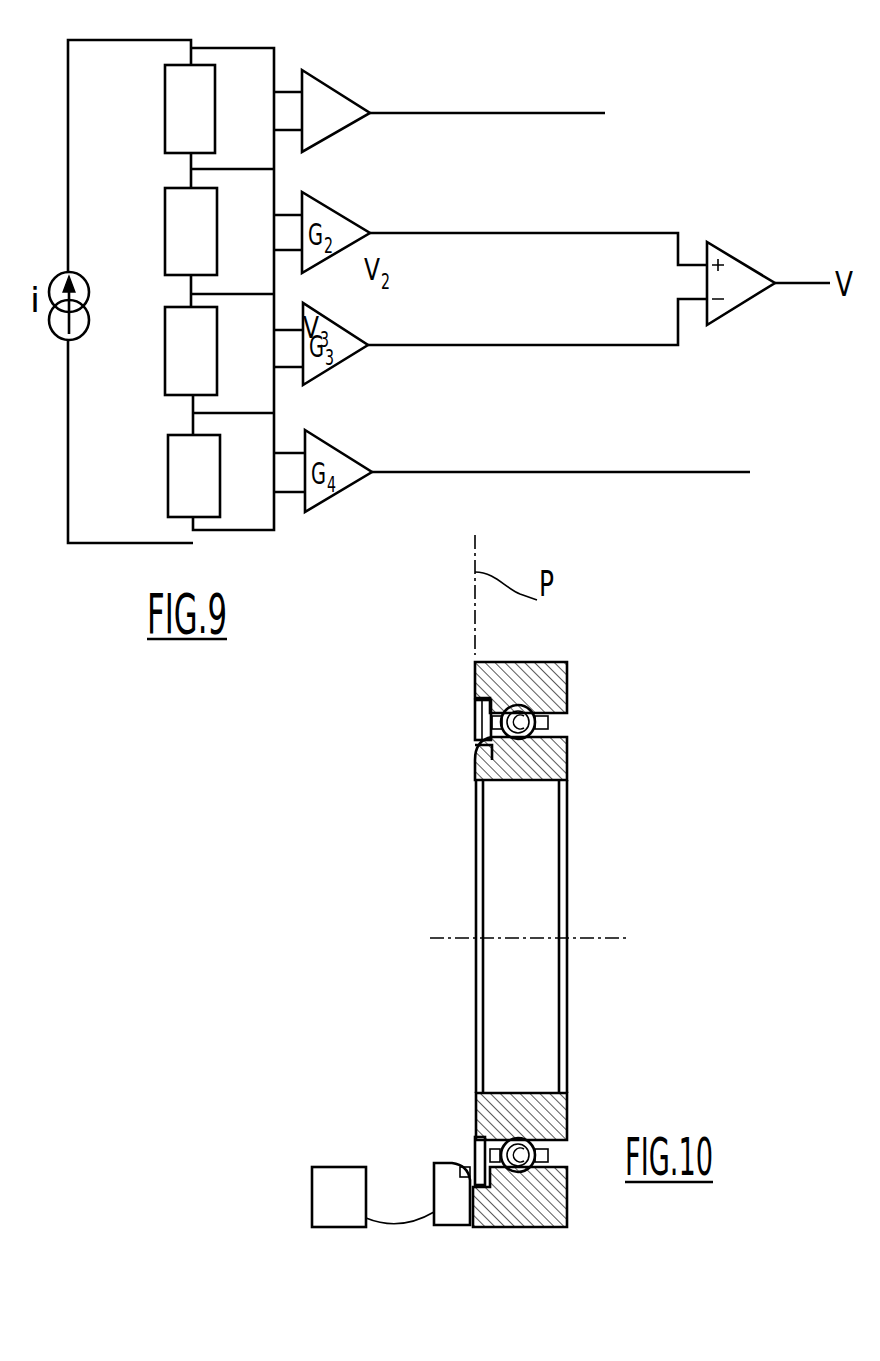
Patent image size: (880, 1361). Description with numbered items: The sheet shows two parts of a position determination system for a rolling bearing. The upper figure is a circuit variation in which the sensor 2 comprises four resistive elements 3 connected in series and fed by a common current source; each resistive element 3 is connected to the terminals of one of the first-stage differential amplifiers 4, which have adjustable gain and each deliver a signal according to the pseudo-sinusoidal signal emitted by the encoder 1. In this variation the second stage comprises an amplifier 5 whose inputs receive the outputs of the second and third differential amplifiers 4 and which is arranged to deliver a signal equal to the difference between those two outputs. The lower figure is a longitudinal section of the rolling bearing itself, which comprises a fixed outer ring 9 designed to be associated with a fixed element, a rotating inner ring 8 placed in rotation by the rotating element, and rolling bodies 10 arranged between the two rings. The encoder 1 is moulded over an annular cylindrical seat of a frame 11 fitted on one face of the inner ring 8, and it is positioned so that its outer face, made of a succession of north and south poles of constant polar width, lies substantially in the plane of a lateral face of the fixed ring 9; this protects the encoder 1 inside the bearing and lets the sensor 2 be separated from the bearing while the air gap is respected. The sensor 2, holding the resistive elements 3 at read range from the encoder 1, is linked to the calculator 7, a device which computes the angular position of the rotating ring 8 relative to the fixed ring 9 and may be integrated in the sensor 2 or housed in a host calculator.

In FIG. 10, the encoder 1 is at (477, 712).
In FIG. 9, the sensor 2 is at (460, 80).
In FIG. 10, the sensor 2 is at (457, 1210).
In FIG. 9, the resistive elements 3 is at (164, 81).
In FIG. 10, the resistive elements 3 is at (460, 1163).
In FIG. 9, the differential amplifiers 4 is at (315, 82).
In FIG. 9, the amplifier 5 is at (743, 302).
In FIG. 10, the calculator 7 is at (327, 1205).
In FIG. 10, the rotating inner ring 8 is at (560, 760).
In FIG. 10, the fixed outer ring 9 is at (560, 685).
In FIG. 10, the rolling bodies 10 is at (548, 722).
In FIG. 10, the frame 11 is at (477, 755).